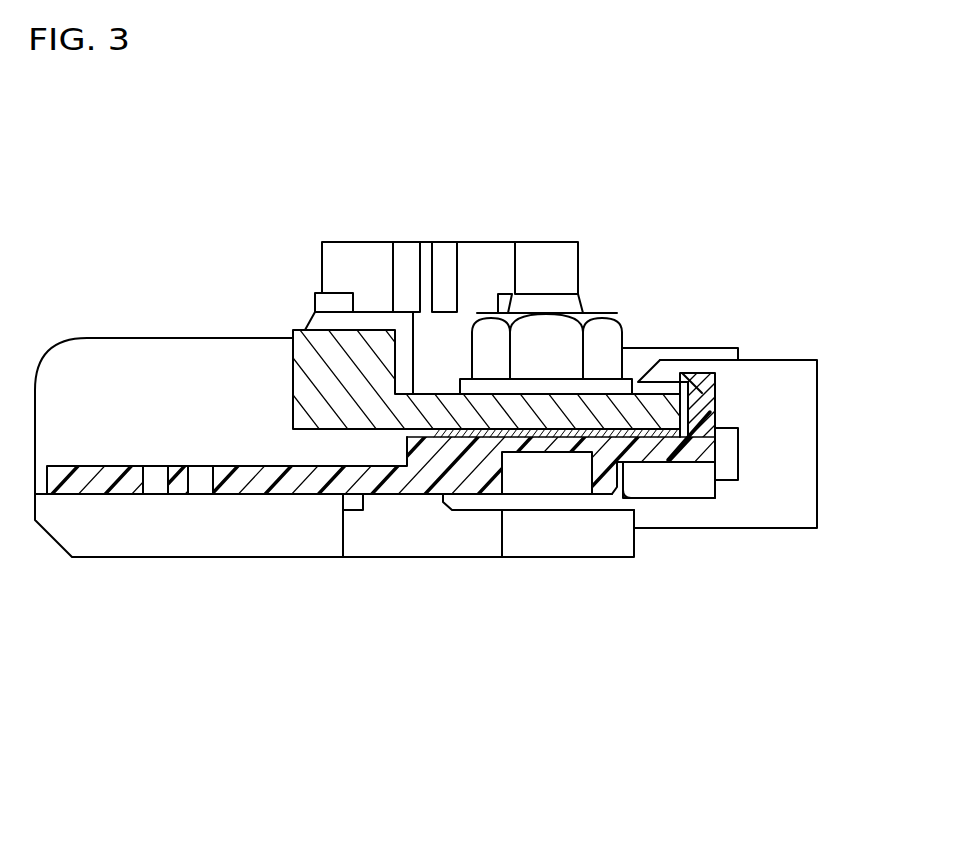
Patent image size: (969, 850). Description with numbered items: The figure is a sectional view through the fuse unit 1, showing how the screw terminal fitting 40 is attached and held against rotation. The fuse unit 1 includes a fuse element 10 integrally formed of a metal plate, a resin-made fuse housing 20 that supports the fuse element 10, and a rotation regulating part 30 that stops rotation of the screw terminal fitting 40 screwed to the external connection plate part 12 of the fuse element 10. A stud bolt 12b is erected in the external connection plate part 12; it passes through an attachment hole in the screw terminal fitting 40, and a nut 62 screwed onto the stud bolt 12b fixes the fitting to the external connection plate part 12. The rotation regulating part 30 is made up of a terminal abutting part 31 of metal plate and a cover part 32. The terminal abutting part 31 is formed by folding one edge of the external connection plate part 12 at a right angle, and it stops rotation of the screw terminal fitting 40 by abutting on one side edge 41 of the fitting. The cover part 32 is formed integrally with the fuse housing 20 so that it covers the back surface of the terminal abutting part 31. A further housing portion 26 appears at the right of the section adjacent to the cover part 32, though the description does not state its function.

The fuse unit 1 is at (818, 440).
The fuse element 10 is at (648, 437).
The external connection plate part 12 is at (470, 430).
The stud bolt 12b is at (553, 242).
The fuse housing 20 is at (148, 560).
The housing cover 26 is at (772, 530).
The rotation regulating part 30 is at (812, 236).
The terminal abutting part 31 is at (692, 420).
The cover part 32 is at (700, 393).
The screw terminal fitting 40 is at (573, 413).
The side edge 41 is at (702, 392).
The nut 62 is at (467, 342).